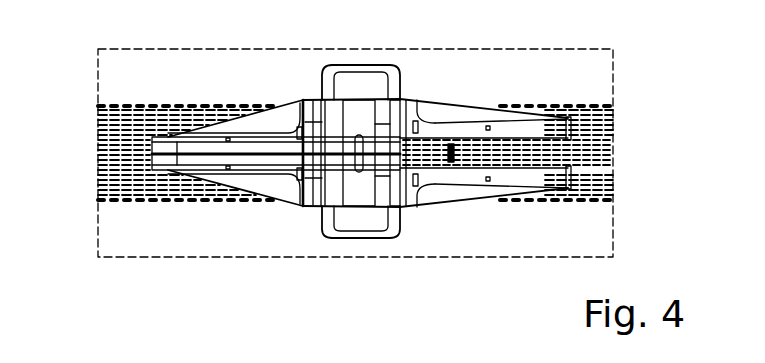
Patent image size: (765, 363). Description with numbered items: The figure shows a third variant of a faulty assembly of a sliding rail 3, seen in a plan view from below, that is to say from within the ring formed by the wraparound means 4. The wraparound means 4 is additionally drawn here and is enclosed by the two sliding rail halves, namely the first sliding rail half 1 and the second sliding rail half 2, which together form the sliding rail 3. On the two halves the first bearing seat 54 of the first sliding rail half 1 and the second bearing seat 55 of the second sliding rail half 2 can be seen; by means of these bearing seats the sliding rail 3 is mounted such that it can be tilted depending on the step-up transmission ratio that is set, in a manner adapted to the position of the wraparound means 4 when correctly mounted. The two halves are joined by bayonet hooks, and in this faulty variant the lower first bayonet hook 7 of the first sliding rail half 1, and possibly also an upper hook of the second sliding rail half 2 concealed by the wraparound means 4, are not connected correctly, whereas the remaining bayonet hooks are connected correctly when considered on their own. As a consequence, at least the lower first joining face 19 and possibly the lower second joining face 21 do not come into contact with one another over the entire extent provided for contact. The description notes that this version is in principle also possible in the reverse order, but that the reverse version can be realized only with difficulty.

The first sliding rail half 1 is at (525, 127).
The second sliding rail half 2 is at (520, 170).
The sliding rail 3 is at (502, 88).
The wraparound means 4 is at (112, 108).
The lower first bayonet hook 7 is at (455, 157).
The lower first joining face 19 is at (407, 207).
The lower second joining face 21 is at (438, 150).
The first bearing seat 54 is at (333, 118).
The second bearing seat 55 is at (385, 177).